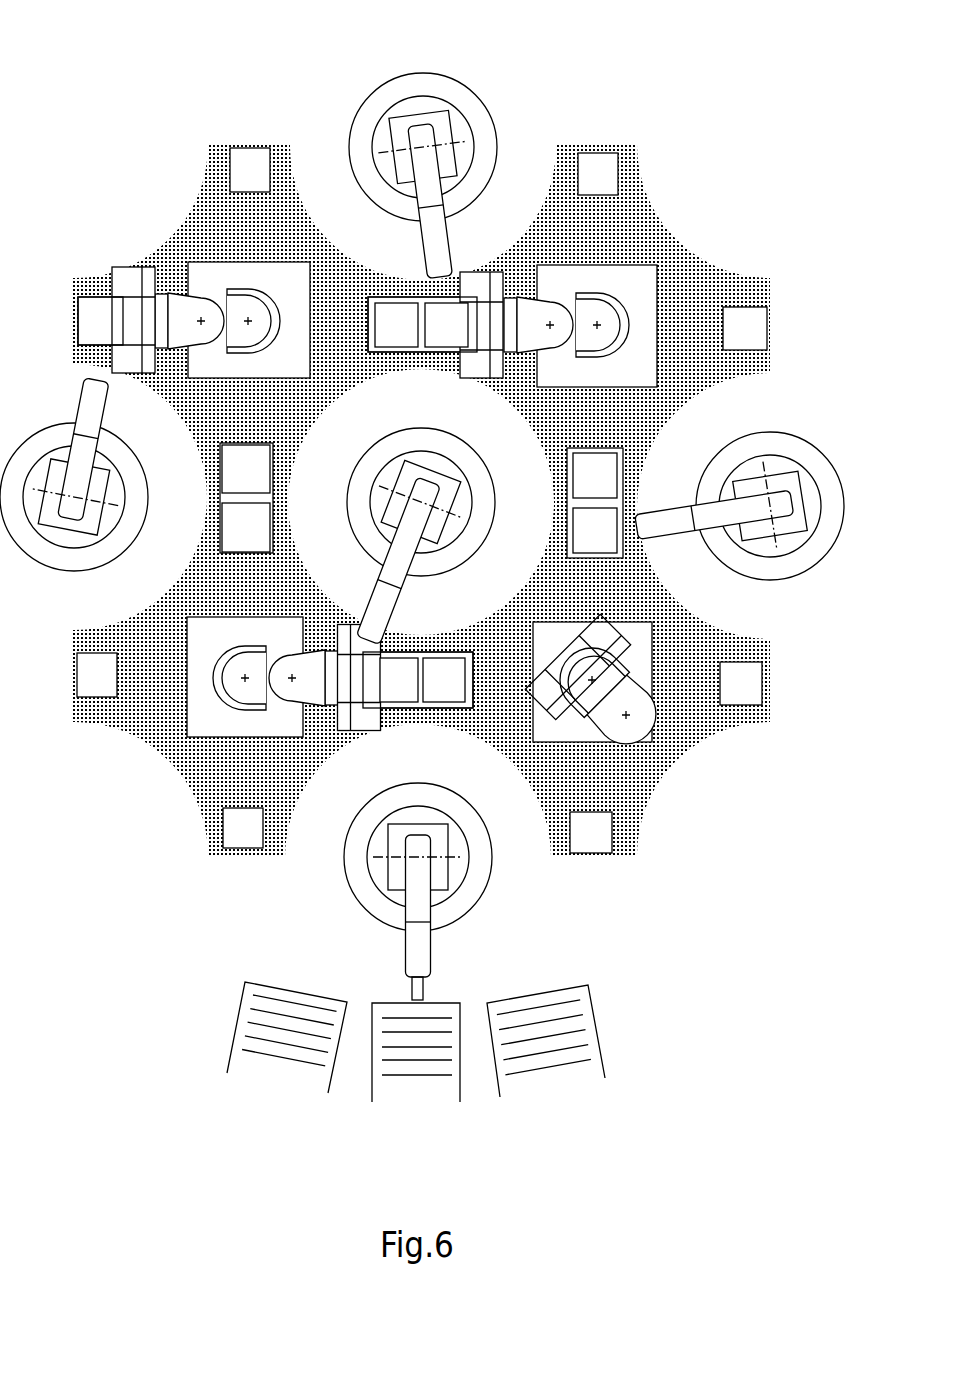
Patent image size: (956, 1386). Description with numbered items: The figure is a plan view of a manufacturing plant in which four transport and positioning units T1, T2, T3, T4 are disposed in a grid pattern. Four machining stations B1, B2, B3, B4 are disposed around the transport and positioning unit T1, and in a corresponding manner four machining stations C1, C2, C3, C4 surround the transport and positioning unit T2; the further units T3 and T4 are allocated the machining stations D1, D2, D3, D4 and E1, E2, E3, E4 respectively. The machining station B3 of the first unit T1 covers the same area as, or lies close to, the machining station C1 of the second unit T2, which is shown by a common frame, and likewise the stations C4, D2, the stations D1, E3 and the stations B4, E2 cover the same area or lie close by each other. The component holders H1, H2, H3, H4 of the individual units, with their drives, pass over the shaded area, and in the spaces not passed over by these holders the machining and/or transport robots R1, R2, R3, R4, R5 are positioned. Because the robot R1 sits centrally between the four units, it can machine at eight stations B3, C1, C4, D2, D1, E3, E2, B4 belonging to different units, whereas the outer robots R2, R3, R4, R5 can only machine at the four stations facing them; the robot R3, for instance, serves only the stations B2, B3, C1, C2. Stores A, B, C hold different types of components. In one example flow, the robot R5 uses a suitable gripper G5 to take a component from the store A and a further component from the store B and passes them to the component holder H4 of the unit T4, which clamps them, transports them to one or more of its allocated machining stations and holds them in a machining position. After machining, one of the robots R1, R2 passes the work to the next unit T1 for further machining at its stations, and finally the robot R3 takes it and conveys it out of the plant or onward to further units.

The machining and transport robot R1 is at (472, 462).
The machining and transport robot R2 is at (120, 457).
The machining and transport robot R3 is at (472, 106).
The machining and transport robot R4 is at (818, 465).
The machining and transport robot R5 is at (465, 815).
The component holder H1 is at (123, 266).
The component holder H2 is at (483, 271).
The component holder H3 is at (622, 634).
The component holder H4 is at (343, 623).
The transport and positioning unit T1 is at (232, 320).
The transport and positioning unit T2 is at (580, 327).
The transport and positioning unit T3 is at (601, 690).
The transport and positioning unit T4 is at (262, 677).
The machining station B1 is at (100, 321).
The machining station B2 is at (250, 170).
The machining station B3 is at (396, 325).
The machining station B4 is at (246, 469).
The machining station C1 is at (446, 325).
The machining station C2 is at (598, 175).
The machining station C3 is at (745, 329).
The machining station C4 is at (595, 476).
The machining station D1 is at (444, 680).
The machining station D2 is at (595, 531).
The machining station D3 is at (741, 684).
The machining station D4 is at (591, 834).
The machining station E1 is at (97, 675).
The machining station E2 is at (246, 527).
The machining station E3 is at (399, 680).
The machining station E4 is at (243, 829).
The gripper G5 is at (422, 991).
The store A is at (268, 1072).
The store B is at (425, 1090).
The store C is at (562, 1077).